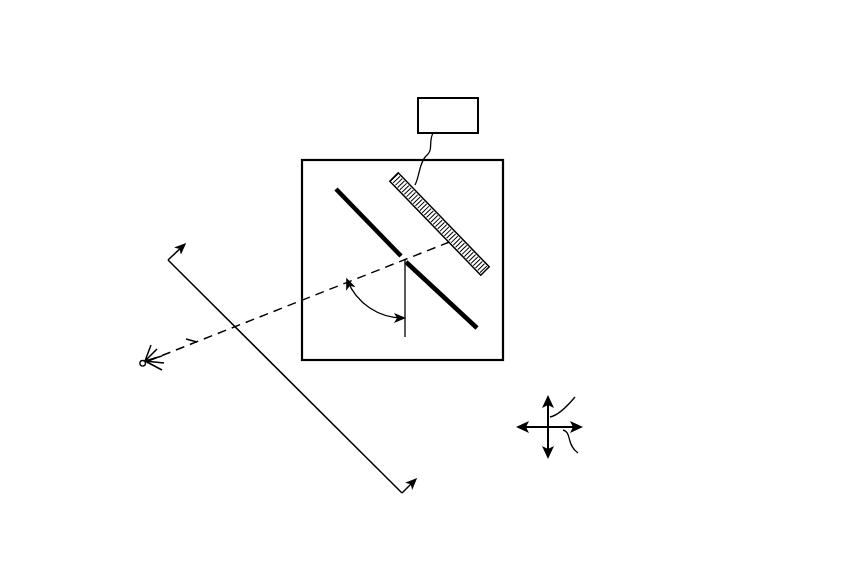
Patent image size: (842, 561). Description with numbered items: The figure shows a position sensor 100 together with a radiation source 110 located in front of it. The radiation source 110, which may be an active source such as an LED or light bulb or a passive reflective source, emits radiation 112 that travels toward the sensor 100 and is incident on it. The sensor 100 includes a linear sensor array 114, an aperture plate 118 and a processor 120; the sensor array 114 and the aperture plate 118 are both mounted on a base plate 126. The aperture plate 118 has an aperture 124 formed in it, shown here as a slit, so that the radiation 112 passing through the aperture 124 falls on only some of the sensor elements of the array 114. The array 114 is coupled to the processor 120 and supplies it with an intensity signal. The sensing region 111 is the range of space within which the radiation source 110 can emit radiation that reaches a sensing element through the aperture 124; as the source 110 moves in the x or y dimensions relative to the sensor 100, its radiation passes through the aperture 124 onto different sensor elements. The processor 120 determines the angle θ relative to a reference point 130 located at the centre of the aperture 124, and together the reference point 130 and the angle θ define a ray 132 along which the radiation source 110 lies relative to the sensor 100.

The position sensor 100 is at (258, 131).
The radiation source 110 is at (140, 367).
The sensing region 111 is at (253, 416).
The radiation 112 is at (148, 367).
The linear sensor array 114 is at (450, 223).
The aperture plate 118 is at (358, 212).
The processor 120 is at (468, 126).
The aperture 124 is at (352, 202).
The base plate 126 is at (490, 307).
The reference point 130 is at (404, 244).
The ray 132 is at (192, 340).